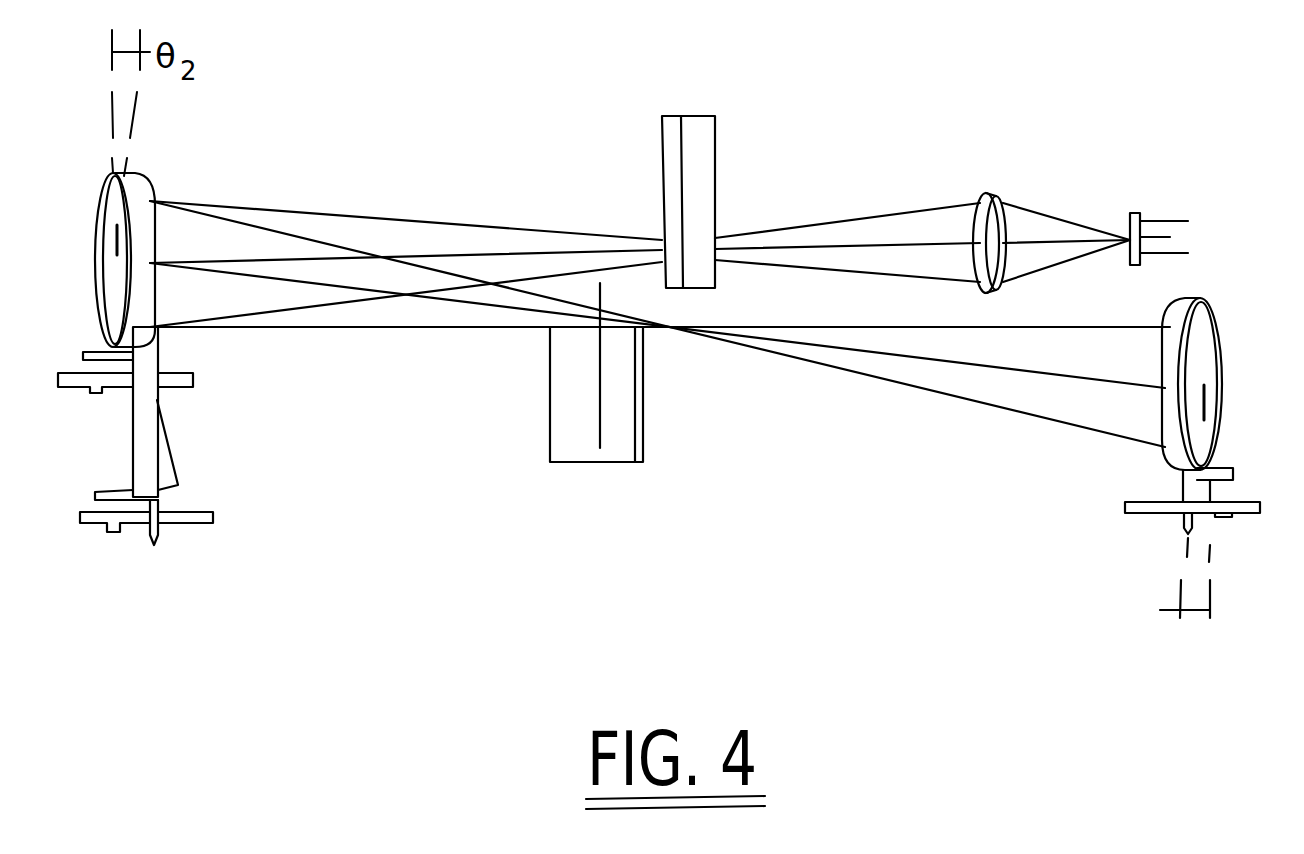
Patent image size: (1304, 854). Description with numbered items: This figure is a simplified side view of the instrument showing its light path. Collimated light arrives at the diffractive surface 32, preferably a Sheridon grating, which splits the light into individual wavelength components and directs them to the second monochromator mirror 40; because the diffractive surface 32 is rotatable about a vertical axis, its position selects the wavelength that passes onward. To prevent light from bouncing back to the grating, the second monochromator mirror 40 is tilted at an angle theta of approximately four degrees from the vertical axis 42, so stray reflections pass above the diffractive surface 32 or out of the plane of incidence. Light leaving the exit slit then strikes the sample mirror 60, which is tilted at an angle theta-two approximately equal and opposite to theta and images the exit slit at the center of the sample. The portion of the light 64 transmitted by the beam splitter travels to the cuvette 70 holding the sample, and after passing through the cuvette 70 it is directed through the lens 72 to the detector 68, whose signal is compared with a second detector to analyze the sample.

The diffractive surface 32 is at (585, 450).
The second monochromator mirror 40 is at (1183, 307).
The vertical axis 42 is at (1210, 545).
The sample mirror 60 is at (138, 197).
The portion of the light 64 is at (878, 220).
The detector 68 is at (1145, 228).
The cuvette 70 is at (698, 132).
The lens 72 is at (995, 190).